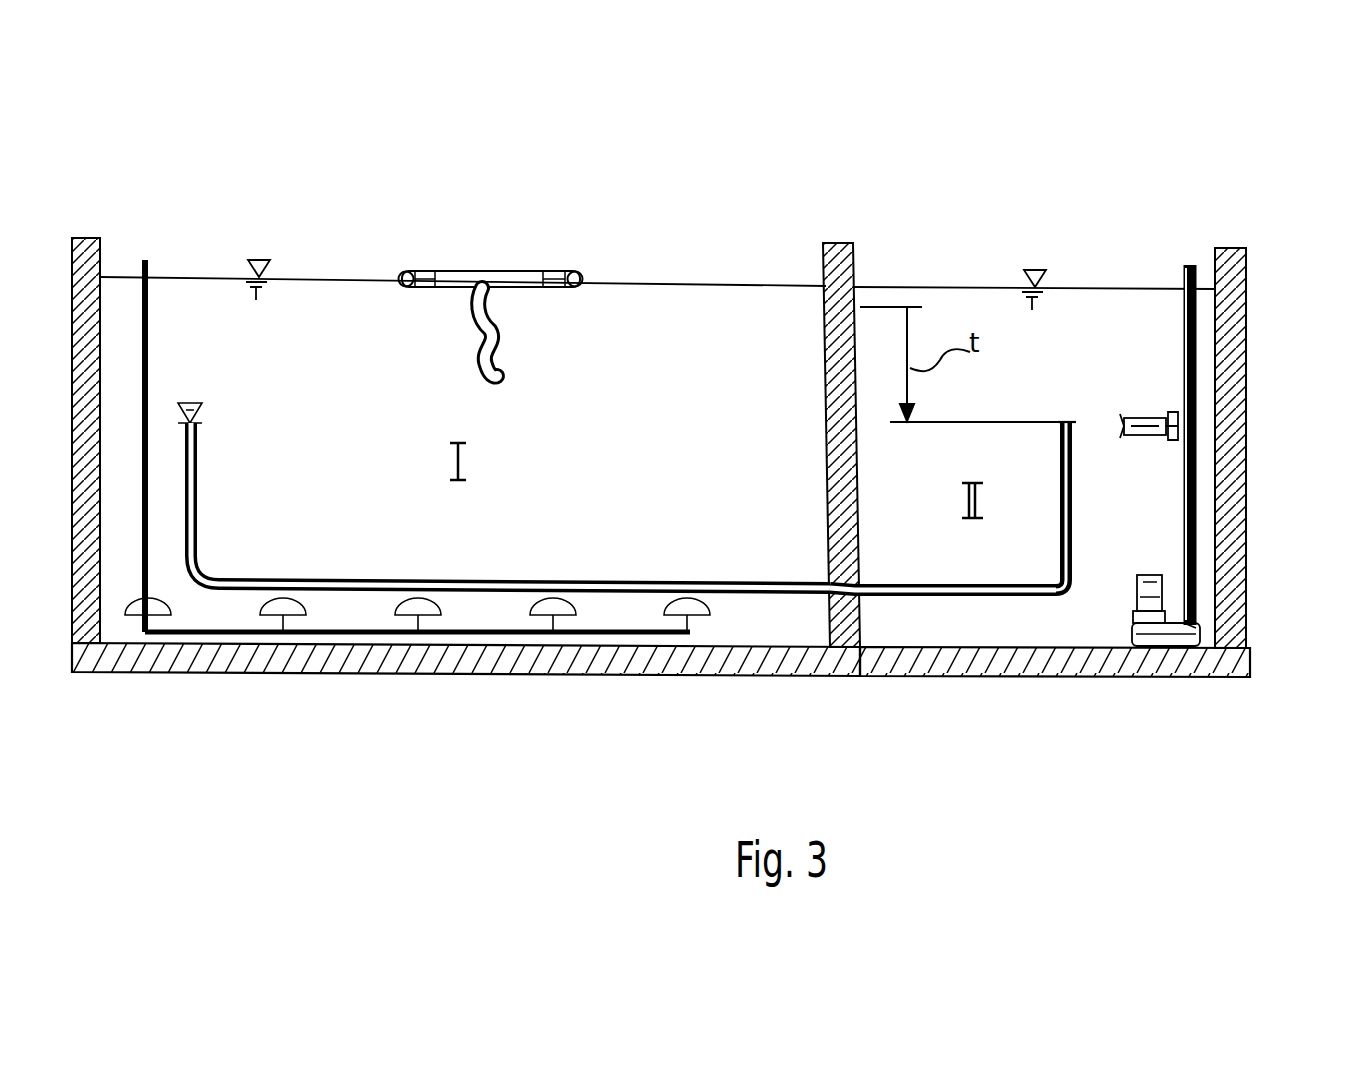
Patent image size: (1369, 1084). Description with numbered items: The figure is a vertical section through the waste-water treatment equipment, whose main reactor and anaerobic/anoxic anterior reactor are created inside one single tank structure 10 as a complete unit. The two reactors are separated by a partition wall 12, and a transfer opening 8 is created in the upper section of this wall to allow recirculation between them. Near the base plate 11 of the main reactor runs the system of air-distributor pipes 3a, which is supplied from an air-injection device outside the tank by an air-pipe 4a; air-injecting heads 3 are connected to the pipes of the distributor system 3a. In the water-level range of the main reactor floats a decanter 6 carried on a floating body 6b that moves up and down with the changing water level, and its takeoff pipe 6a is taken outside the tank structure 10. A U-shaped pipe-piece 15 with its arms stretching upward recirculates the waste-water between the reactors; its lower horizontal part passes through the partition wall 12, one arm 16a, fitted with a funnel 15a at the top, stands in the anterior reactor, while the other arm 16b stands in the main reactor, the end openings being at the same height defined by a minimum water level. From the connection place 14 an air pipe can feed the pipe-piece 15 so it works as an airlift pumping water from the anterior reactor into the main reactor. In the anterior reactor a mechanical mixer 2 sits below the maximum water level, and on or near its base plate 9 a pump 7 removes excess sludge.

The mechanical mixer 2 is at (1130, 412).
The air-injecting heads 3 is at (655, 610).
The air-distributor pipes 3a is at (487, 635).
The air-pipe 4a is at (137, 294).
The decanter 6 is at (473, 270).
The takeoff pipe 6a is at (497, 356).
The floating body 6b is at (402, 272).
The excess sludge removing pump 7 is at (1176, 630).
The transfer opening 8 is at (836, 296).
The base plate 9 is at (985, 676).
The tank structure 10 is at (1246, 347).
The base plate 11 is at (400, 655).
The partition wall 12 is at (857, 320).
The connection place 14 is at (1075, 567).
The U-shaped pipe-piece 15 is at (330, 592).
The funnel 15a is at (190, 405).
The arm 16a is at (176, 520).
The arm 16b is at (1078, 520).